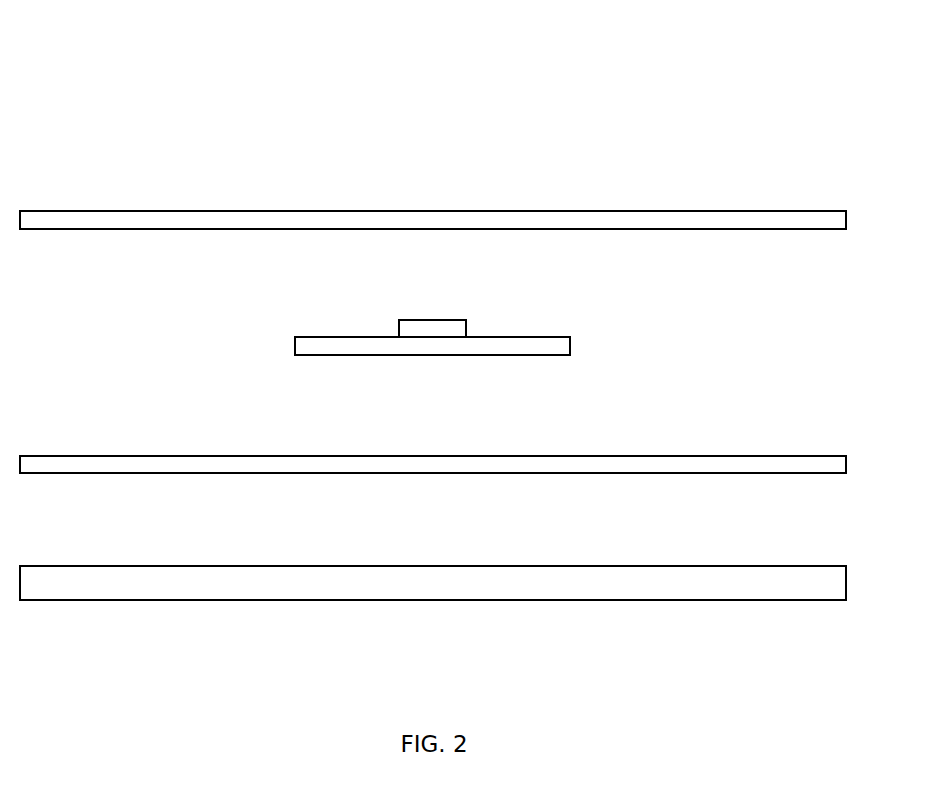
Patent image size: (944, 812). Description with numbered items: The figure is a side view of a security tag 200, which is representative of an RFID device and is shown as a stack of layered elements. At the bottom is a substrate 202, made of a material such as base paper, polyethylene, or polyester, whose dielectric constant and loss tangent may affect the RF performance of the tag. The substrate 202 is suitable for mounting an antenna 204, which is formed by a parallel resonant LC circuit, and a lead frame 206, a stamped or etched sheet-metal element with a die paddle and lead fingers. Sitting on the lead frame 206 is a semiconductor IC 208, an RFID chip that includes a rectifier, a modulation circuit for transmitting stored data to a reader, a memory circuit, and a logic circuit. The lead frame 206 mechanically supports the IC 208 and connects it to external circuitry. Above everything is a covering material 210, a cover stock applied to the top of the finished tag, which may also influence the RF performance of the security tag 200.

The security tag 200 is at (866, 44).
The substrate 202 is at (811, 566).
The antenna 204 is at (811, 456).
The lead frame 206 is at (537, 337).
The semiconductor IC 208 is at (432, 320).
The covering material 210 is at (829, 211).